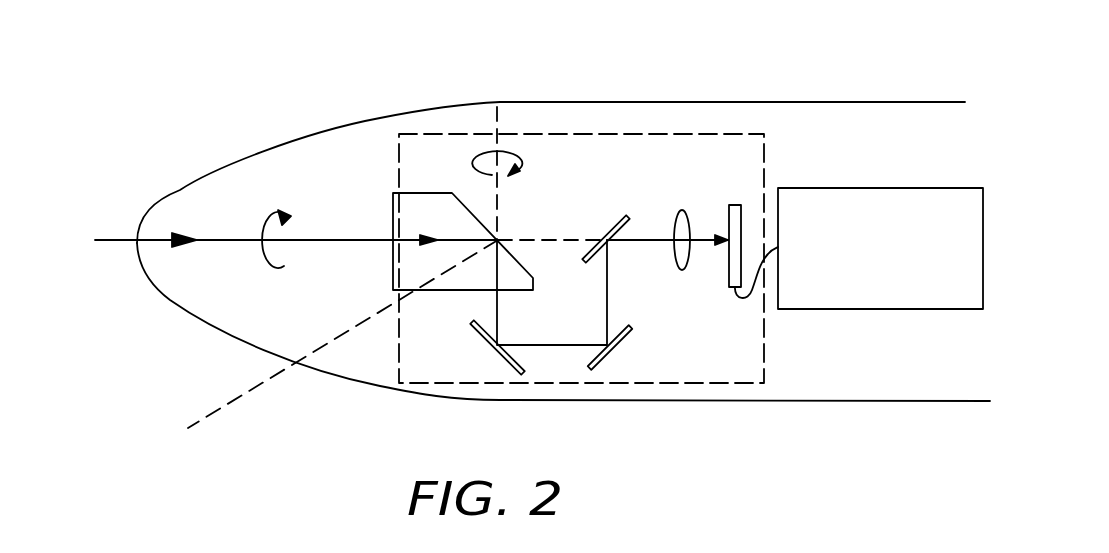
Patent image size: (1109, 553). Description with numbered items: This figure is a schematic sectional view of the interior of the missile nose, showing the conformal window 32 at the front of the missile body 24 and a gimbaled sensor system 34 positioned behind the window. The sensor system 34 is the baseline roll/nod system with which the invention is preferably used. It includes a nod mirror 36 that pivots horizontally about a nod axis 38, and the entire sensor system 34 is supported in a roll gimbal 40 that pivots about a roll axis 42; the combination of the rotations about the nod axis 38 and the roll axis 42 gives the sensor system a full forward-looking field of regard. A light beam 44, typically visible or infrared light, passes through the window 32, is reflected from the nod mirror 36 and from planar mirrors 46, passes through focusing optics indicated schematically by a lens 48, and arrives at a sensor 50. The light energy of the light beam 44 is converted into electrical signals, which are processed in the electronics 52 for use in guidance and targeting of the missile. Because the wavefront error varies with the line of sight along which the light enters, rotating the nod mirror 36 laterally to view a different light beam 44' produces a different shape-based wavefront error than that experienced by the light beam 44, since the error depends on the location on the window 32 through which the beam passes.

The missile body 24 is at (657, 102).
The window 32 is at (223, 167).
The sensor system 34 is at (693, 388).
The nod mirror 36 is at (527, 263).
The nod axis 38 is at (498, 192).
The roll gimbal 40 is at (527, 134).
The roll axis 42 is at (205, 241).
The light beam 44 is at (411, 265).
The light beam 44' is at (343, 340).
The planar mirrors 46 is at (616, 216).
The lens 48 is at (676, 263).
The sensor 50 is at (728, 210).
The electronics 52 is at (878, 310).